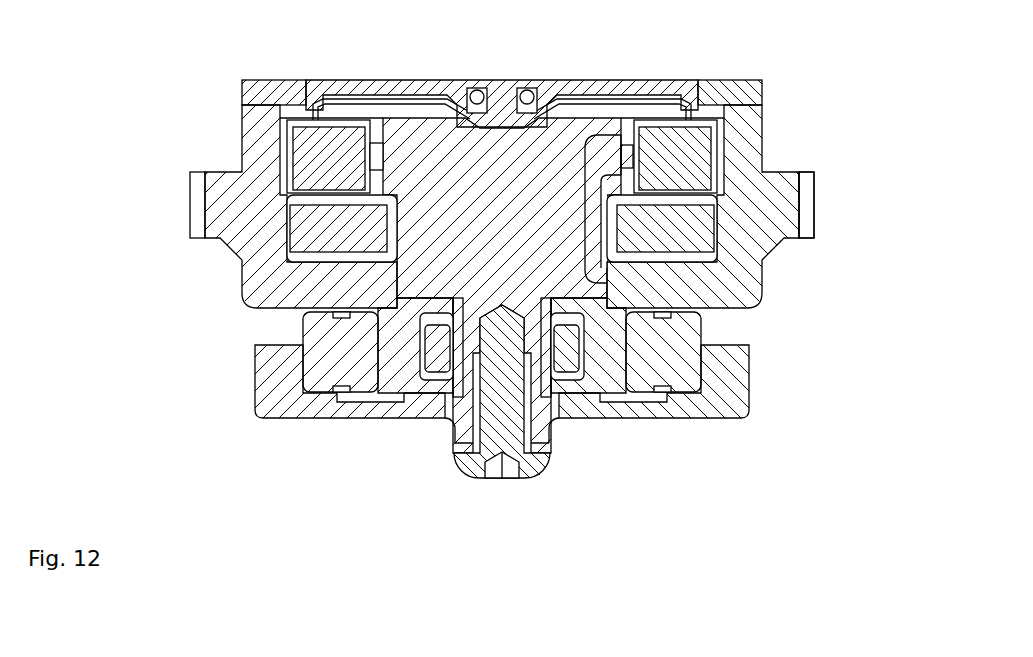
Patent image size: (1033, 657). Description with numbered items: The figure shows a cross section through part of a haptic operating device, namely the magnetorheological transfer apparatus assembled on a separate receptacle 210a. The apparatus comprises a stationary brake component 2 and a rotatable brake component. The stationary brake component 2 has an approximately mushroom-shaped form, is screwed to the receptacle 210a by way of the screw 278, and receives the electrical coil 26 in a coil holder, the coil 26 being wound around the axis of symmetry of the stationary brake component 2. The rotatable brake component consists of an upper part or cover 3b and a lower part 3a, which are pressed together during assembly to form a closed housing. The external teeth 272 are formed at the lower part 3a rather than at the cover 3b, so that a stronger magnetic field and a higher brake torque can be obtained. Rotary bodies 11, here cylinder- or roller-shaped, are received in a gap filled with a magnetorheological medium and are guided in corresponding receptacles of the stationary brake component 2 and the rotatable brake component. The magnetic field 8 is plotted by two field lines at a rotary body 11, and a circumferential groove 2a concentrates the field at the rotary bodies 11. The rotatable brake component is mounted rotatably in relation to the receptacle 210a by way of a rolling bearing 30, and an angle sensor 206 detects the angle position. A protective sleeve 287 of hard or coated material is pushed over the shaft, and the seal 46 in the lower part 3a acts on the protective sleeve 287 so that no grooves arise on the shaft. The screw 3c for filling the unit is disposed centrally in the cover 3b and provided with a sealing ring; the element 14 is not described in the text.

The stationary brake component 2 is at (558, 290).
The circumferential groove 2a is at (625, 155).
The lower part 3a is at (600, 340).
The cover 3b is at (373, 88).
The screw 3c is at (500, 88).
The magnetic field 8 is at (740, 275).
The rotary bodies 11 is at (693, 153).
The coil 14 is at (318, 153).
The electrical coil 26 is at (293, 233).
The rolling bearing 30 is at (318, 378).
The seal 46 is at (437, 380).
The angle sensor 206 is at (257, 85).
The receptacle 210a is at (275, 397).
The external teeth 272 is at (805, 200).
The screw 278 is at (501, 485).
The protective sleeve 287 is at (448, 378).